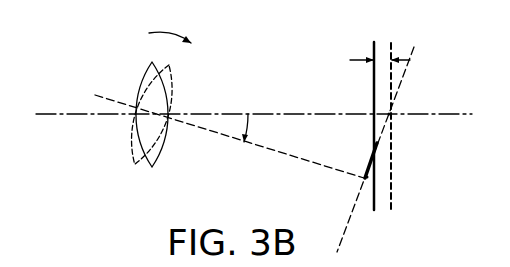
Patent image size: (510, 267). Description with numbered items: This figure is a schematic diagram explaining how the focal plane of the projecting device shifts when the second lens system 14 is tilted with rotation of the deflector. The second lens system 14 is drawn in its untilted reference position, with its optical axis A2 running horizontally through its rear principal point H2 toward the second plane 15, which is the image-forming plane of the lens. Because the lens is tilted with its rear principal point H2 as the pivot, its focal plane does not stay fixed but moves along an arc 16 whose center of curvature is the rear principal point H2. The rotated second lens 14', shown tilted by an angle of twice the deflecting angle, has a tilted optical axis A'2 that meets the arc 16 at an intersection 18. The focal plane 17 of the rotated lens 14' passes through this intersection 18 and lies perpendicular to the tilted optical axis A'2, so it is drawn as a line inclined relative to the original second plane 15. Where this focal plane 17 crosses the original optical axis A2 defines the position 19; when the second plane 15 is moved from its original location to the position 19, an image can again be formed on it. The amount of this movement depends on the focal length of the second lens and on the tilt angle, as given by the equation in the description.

The second lens system 14 is at (167, 124).
The rotated second lens 14' is at (139, 116).
The second plane 15 is at (376, 42).
The arc 16 is at (364, 173).
The focal plane 17 is at (346, 230).
The intersection 18 is at (372, 177).
The position 19 is at (391, 115).
The rear principal point H2 is at (162, 113).
The optical axis of the second lens system A2 is at (296, 113).
The tilted optical axis A'2 is at (229, 145).